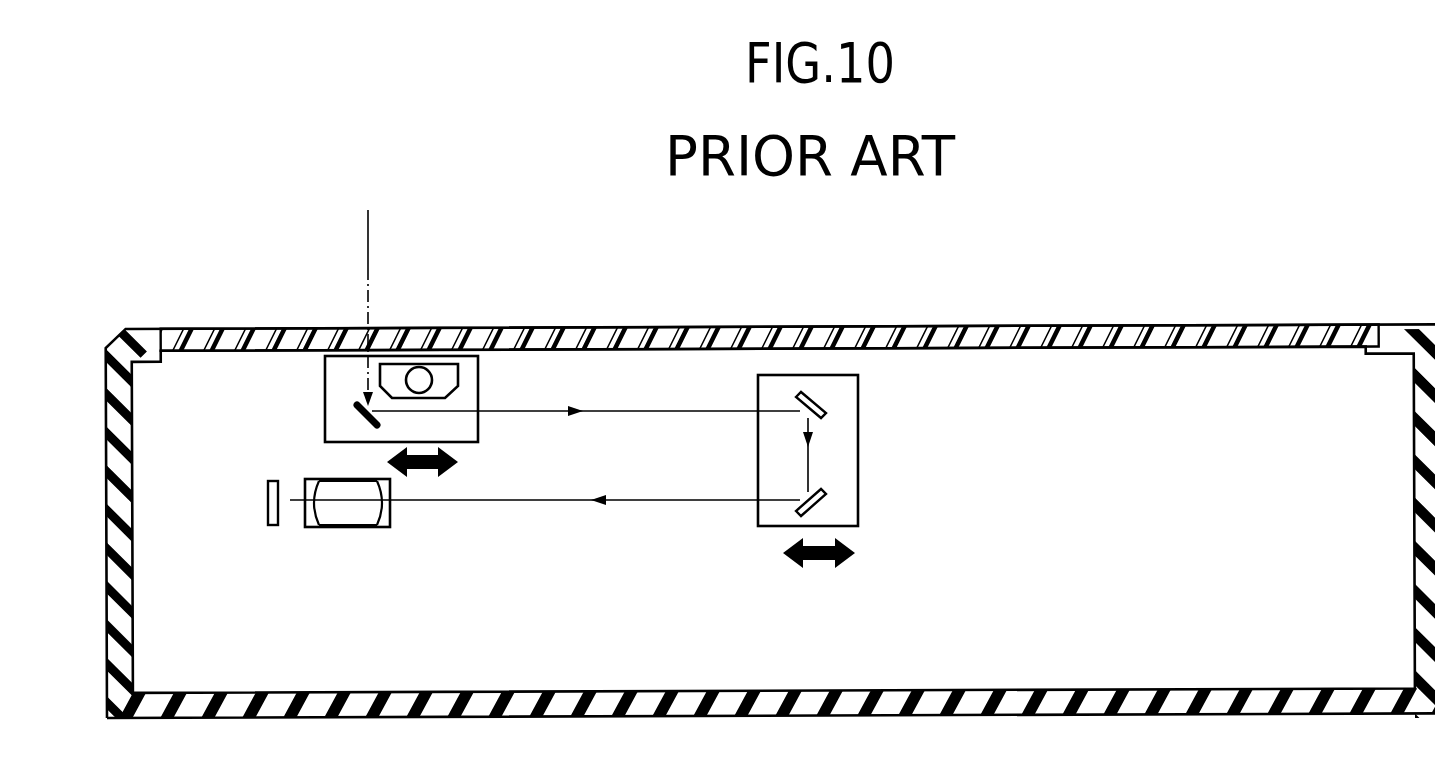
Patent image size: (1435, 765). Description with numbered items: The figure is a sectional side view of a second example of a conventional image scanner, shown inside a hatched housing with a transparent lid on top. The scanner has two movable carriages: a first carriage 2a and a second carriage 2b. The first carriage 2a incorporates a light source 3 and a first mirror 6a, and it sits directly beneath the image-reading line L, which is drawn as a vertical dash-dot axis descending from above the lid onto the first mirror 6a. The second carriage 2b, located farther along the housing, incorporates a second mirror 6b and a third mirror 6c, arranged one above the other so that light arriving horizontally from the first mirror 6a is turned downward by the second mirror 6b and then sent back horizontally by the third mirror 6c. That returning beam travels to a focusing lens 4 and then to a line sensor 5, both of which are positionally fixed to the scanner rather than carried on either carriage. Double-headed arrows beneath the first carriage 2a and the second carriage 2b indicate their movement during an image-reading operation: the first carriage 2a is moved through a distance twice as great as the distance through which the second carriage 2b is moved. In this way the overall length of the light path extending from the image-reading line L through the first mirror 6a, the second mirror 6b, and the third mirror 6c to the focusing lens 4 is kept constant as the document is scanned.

The image-reading line L is at (369, 308).
The first carriage 2a is at (325, 378).
The second carriage 2b is at (858, 452).
The light source 3 is at (425, 369).
The focusing lens 4 is at (353, 529).
The line sensor 5 is at (267, 512).
The first mirror 6a is at (357, 417).
The second mirror 6b is at (823, 405).
The third mirror 6c is at (823, 503).